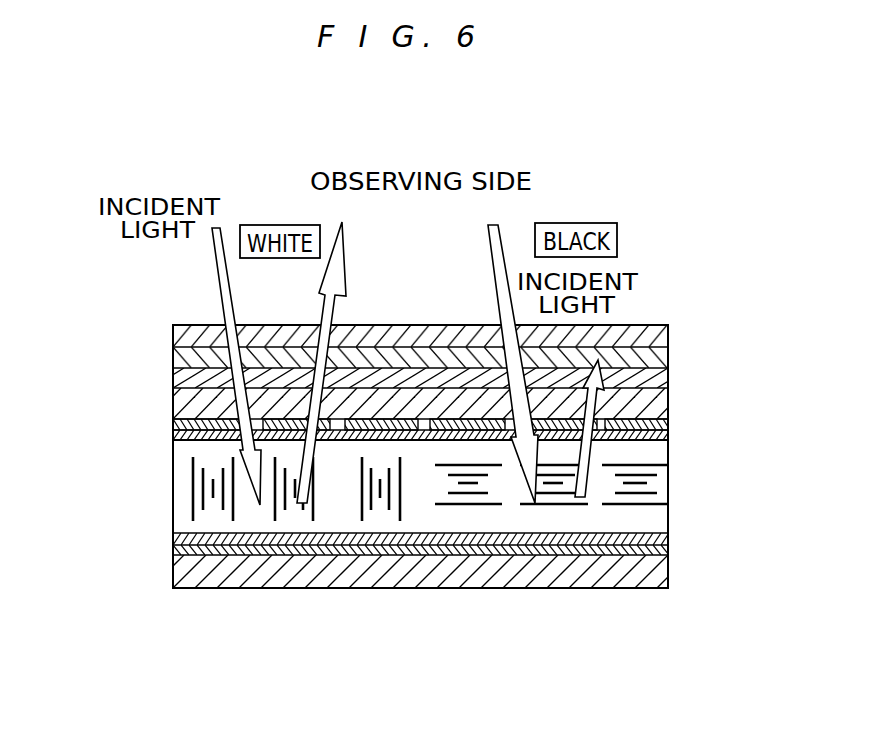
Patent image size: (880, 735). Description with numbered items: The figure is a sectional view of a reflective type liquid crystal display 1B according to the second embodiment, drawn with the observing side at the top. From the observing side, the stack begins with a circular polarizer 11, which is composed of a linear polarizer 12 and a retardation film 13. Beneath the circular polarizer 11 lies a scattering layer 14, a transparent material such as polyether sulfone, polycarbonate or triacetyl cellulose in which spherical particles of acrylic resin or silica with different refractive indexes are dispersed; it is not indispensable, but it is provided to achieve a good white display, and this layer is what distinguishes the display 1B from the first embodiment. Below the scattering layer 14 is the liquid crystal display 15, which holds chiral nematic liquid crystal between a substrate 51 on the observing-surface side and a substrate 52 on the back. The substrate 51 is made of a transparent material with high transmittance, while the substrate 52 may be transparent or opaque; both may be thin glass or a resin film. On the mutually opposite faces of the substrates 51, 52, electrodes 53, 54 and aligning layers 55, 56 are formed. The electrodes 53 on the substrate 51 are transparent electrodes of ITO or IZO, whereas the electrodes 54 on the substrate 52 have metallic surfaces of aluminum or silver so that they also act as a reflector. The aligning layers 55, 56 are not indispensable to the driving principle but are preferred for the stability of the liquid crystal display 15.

The liquid crystal display 1B is at (415, 262).
The circular polarizer 11 is at (740, 315).
The linear polarizer 12 is at (668, 335).
The retardation film 13 is at (668, 356).
The scattering layer 14 is at (668, 378).
The liquid crystal display 15 is at (681, 389).
The substrate 51 is at (183, 403).
The substrate 52 is at (175, 570).
The electrodes 53 is at (175, 428).
The electrodes 54 is at (175, 551).
The aligning layer 55 is at (176, 438).
The aligning layer 56 is at (177, 532).